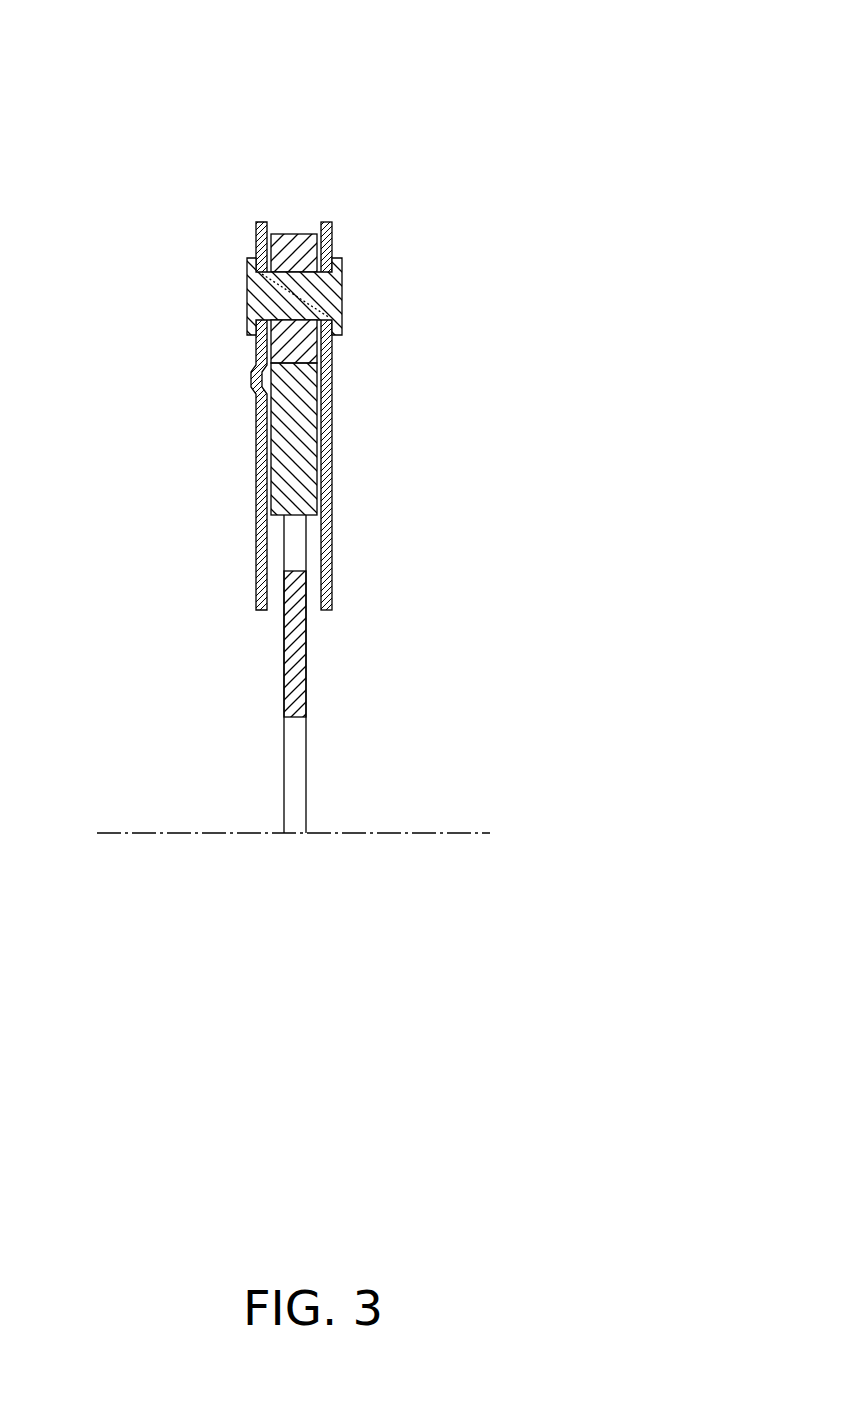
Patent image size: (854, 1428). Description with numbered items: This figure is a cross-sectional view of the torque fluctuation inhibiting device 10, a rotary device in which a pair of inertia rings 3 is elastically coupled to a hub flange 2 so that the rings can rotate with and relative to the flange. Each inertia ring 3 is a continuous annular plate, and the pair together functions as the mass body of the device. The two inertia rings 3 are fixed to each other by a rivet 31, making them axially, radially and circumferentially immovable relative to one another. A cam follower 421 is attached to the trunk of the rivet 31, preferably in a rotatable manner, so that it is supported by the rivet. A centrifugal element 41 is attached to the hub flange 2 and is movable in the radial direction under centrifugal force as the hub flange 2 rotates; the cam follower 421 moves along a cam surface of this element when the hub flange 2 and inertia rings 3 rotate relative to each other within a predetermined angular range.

The torque fluctuation inhibiting device 10 is at (296, 435).
The inertia rings 3 is at (260, 222).
The cam follower 421 is at (297, 233).
The rivet 31 is at (343, 301).
The centrifugal element 41 is at (305, 432).
The hub flange 2 is at (306, 665).